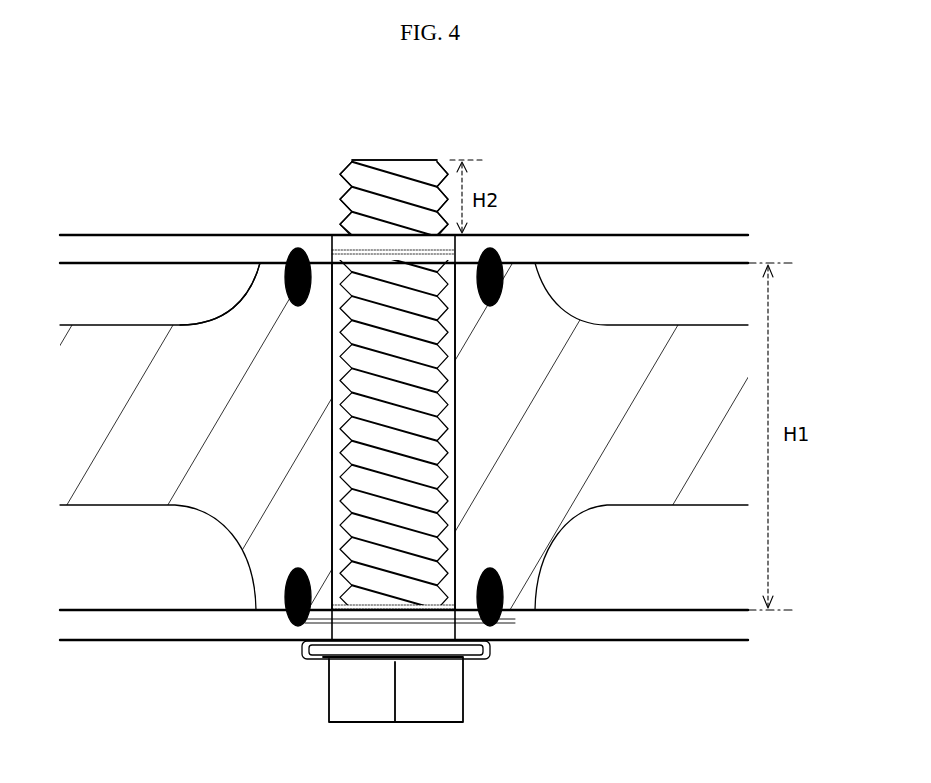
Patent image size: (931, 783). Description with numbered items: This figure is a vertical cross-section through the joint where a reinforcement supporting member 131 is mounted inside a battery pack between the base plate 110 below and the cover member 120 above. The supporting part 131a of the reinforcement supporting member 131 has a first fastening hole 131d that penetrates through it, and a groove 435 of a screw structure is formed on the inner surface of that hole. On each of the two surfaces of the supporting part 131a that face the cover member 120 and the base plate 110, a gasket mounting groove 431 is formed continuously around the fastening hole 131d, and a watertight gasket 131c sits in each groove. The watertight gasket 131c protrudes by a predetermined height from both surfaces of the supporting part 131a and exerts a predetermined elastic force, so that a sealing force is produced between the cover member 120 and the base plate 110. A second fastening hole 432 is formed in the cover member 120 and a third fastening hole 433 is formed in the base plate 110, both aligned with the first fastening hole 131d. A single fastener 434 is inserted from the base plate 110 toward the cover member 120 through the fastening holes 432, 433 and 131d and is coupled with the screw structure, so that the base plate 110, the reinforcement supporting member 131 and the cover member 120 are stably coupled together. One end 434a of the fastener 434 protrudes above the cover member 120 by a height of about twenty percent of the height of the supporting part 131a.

The base plate 110 is at (613, 643).
The cover member 120 is at (642, 232).
The reinforcement supporting member 131 is at (199, 276).
The supporting part 131a is at (253, 270).
The watertight gasket 131c is at (500, 262).
The fastening hole 131d is at (347, 450).
The gasket mounting groove 431 is at (500, 307).
The second fastening hole 432 is at (330, 248).
The third fastening hole 433 is at (457, 628).
The fastener 434 is at (330, 688).
The one end of the fastener 434a is at (353, 160).
The groove of a screw structure 435 is at (337, 480).